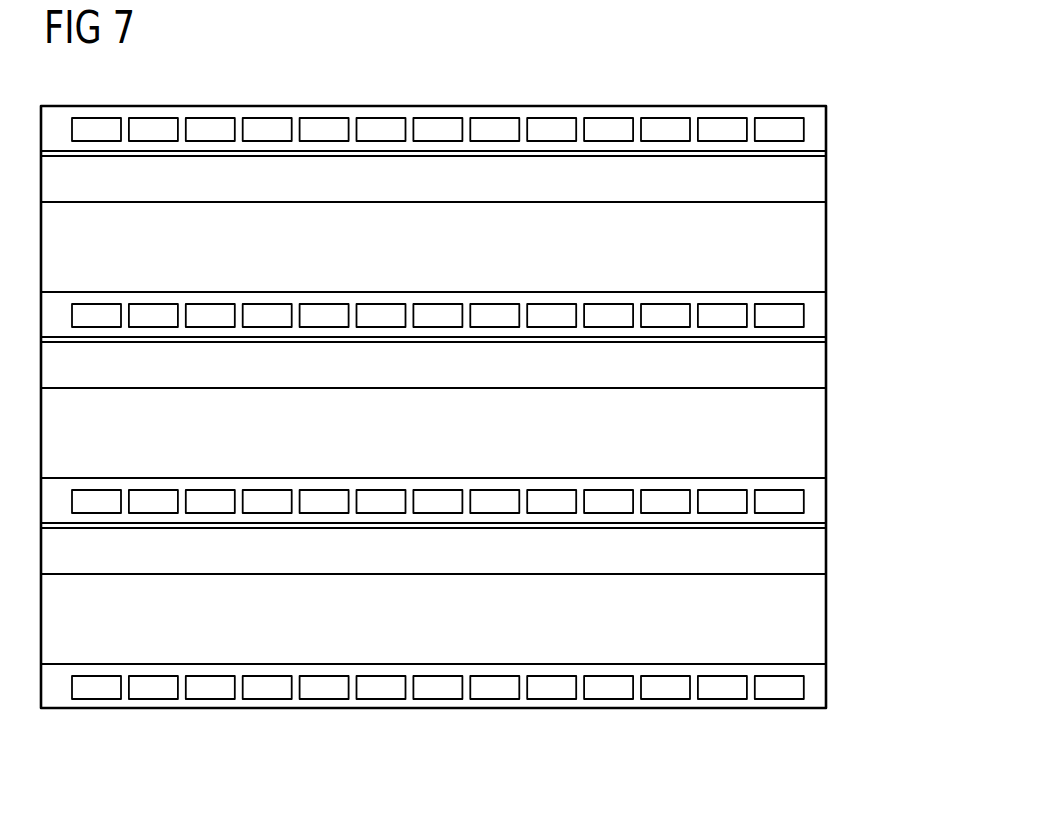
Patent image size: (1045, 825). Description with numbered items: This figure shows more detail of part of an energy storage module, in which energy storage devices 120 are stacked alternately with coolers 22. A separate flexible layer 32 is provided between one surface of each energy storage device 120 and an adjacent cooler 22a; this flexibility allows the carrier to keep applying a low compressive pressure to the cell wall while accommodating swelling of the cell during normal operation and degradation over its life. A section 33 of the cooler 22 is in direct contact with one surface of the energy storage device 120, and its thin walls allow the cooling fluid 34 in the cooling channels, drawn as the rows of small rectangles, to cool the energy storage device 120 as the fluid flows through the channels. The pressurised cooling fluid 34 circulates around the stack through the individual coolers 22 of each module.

The cooler 22 is at (416, 732).
The adjacent cooler 22a is at (847, 501).
The flexible layer 32 is at (817, 181).
The energy storage device 120 is at (847, 248).
The cooling fluid 34 is at (723, 692).
The section of the cooler 33 is at (812, 697).